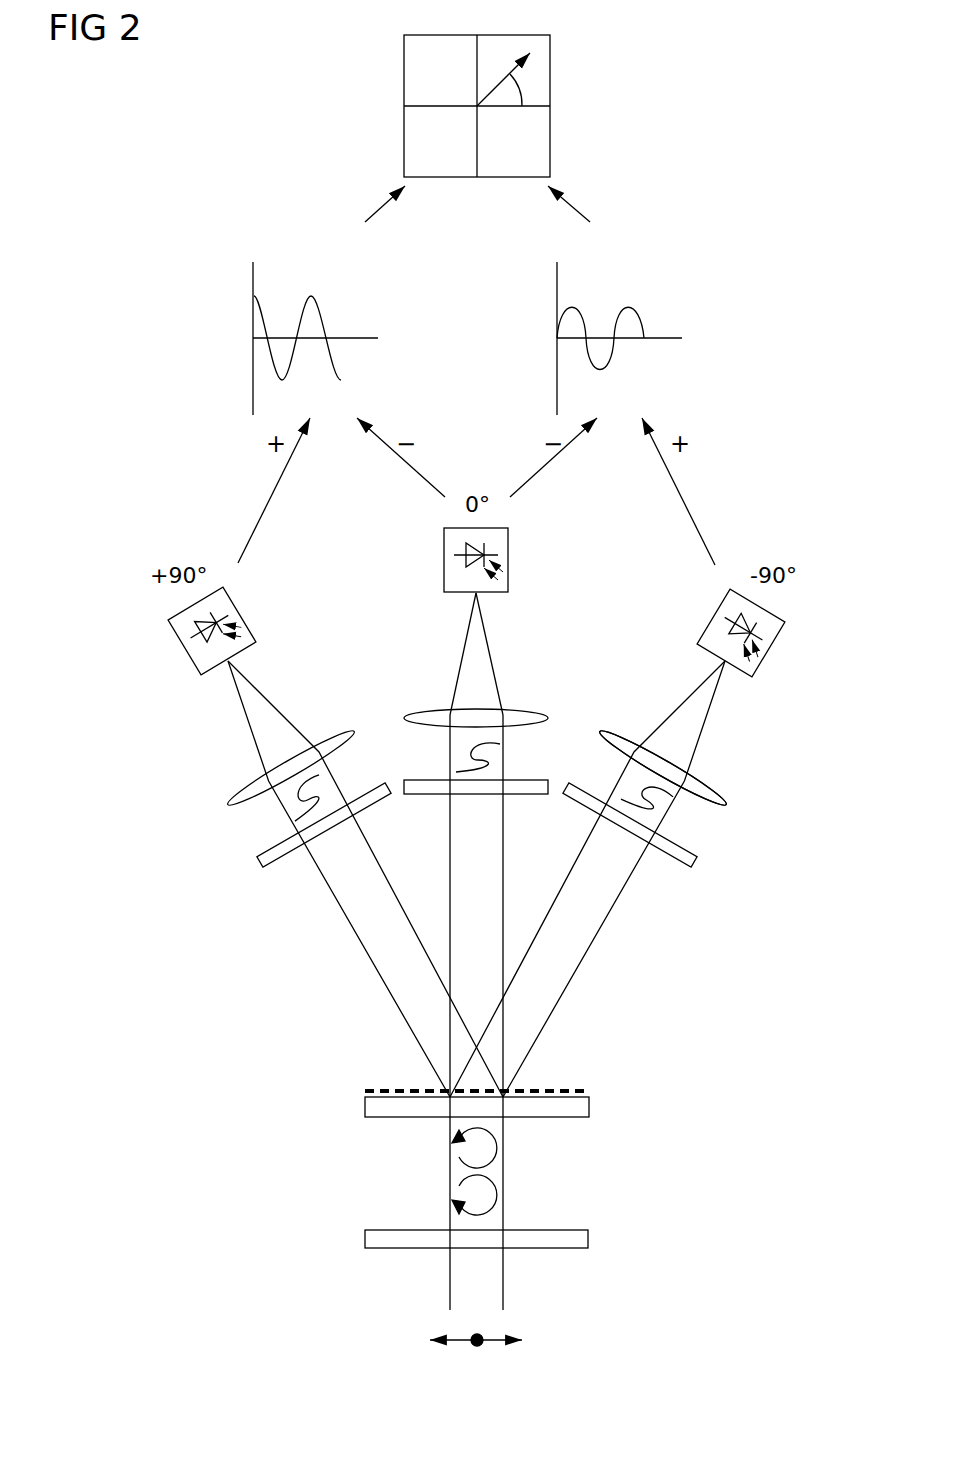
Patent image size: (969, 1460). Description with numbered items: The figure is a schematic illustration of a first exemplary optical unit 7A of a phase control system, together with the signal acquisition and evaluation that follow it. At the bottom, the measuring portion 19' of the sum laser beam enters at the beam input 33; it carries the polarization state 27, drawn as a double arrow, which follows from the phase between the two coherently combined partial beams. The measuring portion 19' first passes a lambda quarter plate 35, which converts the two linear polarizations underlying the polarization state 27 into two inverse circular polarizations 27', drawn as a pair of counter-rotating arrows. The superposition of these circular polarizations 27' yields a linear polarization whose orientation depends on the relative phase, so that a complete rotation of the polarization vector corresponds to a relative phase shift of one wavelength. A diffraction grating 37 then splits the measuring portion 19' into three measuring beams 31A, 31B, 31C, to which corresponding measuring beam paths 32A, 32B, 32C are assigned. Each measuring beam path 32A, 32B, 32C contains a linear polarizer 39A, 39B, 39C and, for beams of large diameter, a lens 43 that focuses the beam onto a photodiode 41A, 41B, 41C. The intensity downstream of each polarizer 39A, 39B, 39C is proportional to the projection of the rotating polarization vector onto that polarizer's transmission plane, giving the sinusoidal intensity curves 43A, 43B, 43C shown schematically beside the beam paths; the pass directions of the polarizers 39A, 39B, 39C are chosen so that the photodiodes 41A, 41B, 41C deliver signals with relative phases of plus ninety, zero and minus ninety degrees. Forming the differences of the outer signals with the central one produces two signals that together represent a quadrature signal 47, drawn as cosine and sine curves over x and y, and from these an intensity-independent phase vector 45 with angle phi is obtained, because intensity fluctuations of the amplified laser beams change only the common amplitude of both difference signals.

The phase vector 45 is at (470, 82).
The quadrature signal 47 is at (240, 310).
The optical unit 7A is at (105, 568).
The photodiode 41A is at (185, 650).
The photodiode 41B is at (512, 560).
The photodiode 41C is at (770, 656).
The measuring beam path 32A is at (262, 987).
The measuring beam path 32B is at (553, 697).
The measuring beam path 32C is at (665, 1002).
The intensity curve 43A is at (290, 808).
The intensity curve 43B is at (450, 745).
The intensity curve 43C is at (622, 777).
The lens 43 is at (720, 790).
The linear polarizer 39A is at (260, 864).
The linear polarizer 39B is at (527, 795).
The linear polarizer 39C is at (695, 862).
The measuring beam 31A is at (406, 1033).
The measuring beam 31B is at (462, 834).
The measuring beam 31C is at (548, 1033).
The diffraction grating 37 is at (592, 1105).
The inverse circular polarizations 27' is at (410, 1171).
The lambda quarter plate 35 is at (590, 1240).
The measuring portion 19' is at (413, 1286).
The polarization state 27 is at (502, 1325).
The beam input 33 is at (410, 1342).